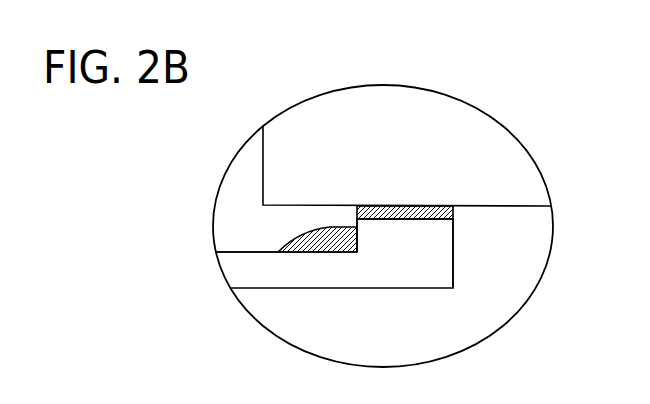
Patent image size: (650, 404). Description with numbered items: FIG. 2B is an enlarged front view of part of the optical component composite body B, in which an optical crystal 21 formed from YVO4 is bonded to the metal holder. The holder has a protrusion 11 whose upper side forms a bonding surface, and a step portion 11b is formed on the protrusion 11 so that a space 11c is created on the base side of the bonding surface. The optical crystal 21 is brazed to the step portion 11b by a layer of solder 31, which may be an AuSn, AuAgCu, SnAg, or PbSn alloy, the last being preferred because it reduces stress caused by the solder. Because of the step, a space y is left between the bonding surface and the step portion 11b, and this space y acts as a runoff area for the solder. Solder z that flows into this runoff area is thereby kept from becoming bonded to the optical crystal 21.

The optical component composite body B is at (482, 97).
The optical crystal 21 is at (487, 135).
The solder 31 is at (453, 212).
The protrusion 11 is at (447, 270).
The step portion 11b is at (437, 238).
The space 11c is at (233, 239).
The solder z is at (310, 252).
The space y is at (335, 223).